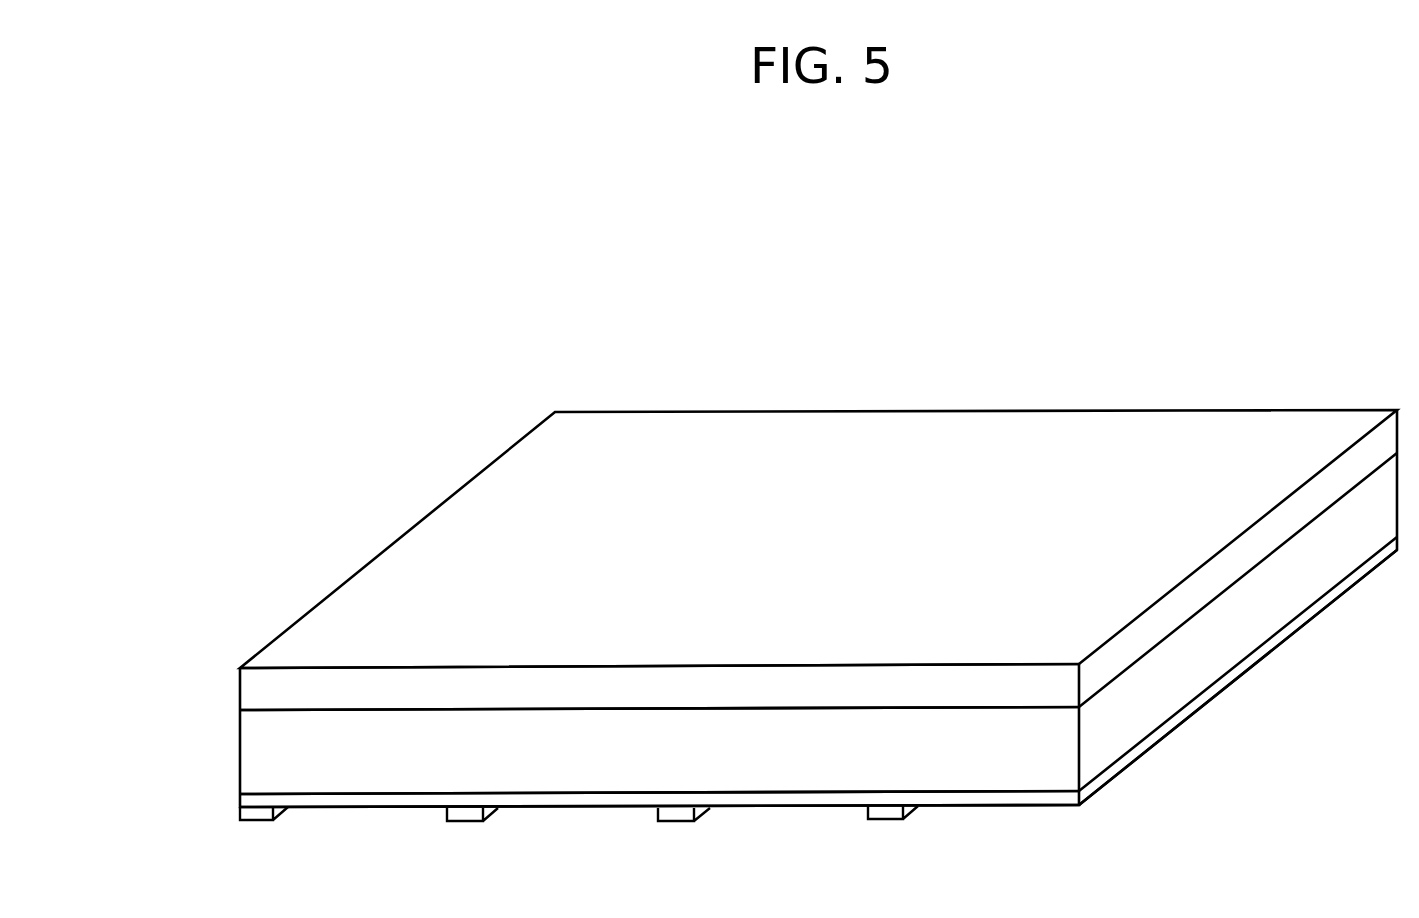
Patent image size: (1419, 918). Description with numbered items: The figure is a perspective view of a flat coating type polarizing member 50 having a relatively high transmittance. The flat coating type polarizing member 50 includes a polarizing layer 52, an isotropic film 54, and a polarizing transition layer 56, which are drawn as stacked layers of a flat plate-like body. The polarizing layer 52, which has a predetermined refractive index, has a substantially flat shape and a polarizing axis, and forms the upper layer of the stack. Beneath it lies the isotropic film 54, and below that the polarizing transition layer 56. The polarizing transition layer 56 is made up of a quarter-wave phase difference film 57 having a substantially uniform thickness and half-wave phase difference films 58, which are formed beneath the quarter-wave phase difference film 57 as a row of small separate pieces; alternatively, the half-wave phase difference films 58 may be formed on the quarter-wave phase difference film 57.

The flat coating type polarizing member 50 is at (884, 327).
The polarizing layer 52 is at (248, 690).
The isotropic film 54 is at (248, 746).
The polarizing transition layer 56 is at (749, 693).
The λ/4 phase difference film 57 is at (248, 797).
The λ/2 phase difference films 58 is at (245, 818).